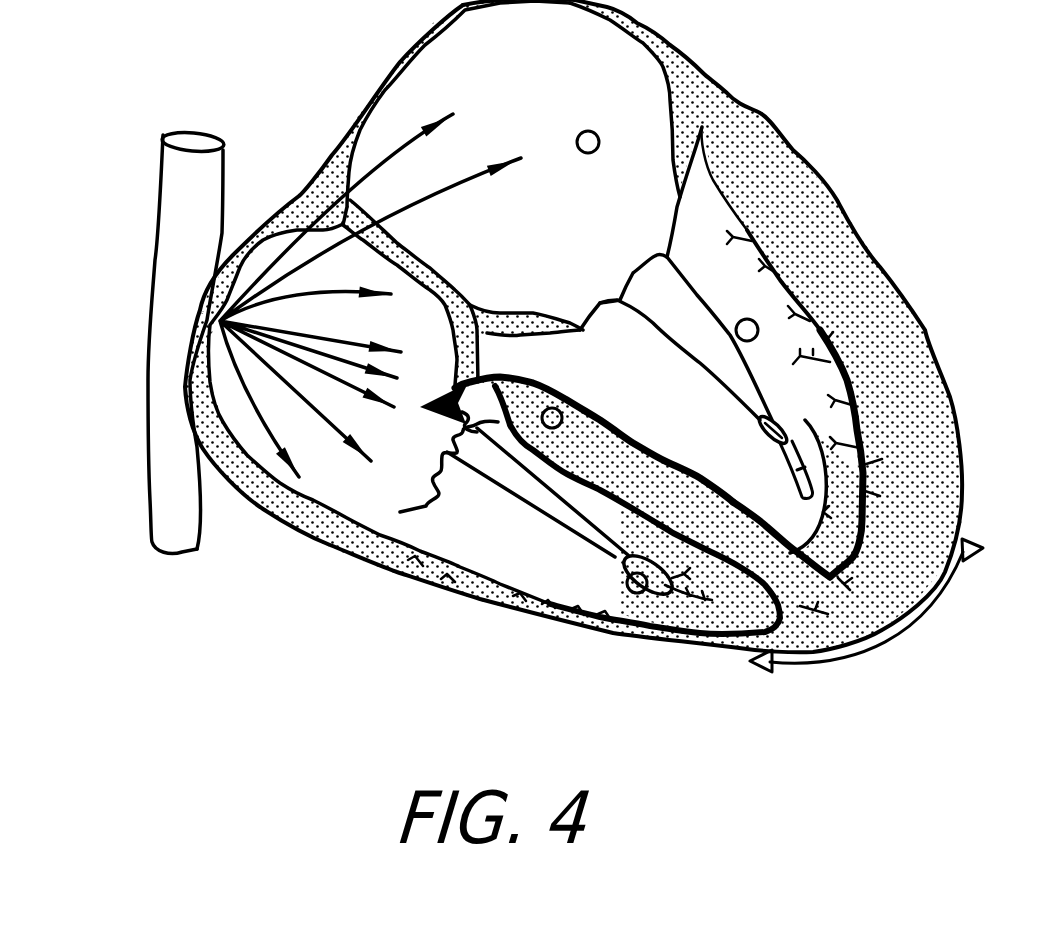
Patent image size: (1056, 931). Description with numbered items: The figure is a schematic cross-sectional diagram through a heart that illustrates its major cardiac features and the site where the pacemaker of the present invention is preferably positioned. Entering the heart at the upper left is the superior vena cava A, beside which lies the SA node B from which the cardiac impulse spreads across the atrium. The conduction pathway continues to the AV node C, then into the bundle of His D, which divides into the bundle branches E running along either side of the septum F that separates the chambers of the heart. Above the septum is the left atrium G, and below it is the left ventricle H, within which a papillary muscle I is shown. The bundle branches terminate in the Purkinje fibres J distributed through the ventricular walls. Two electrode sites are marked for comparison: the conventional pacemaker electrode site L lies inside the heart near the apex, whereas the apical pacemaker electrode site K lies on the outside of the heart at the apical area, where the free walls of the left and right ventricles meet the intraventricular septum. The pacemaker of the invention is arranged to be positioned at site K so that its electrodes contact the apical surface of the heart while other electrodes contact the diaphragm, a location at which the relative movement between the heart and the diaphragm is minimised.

The superior vena cava A is at (190, 138).
The SA node B is at (220, 322).
The AV node C is at (430, 404).
The bundle of His D is at (480, 382).
The bundle branches E is at (630, 440).
The septum F is at (560, 412).
The left atrium G is at (583, 131).
The left ventricle H is at (758, 327).
The papillary muscle I is at (675, 550).
The Purkinje fibres J is at (833, 613).
The apical pacemaker electrode site K is at (950, 591).
The conventional pacemaker electrode site L is at (625, 598).